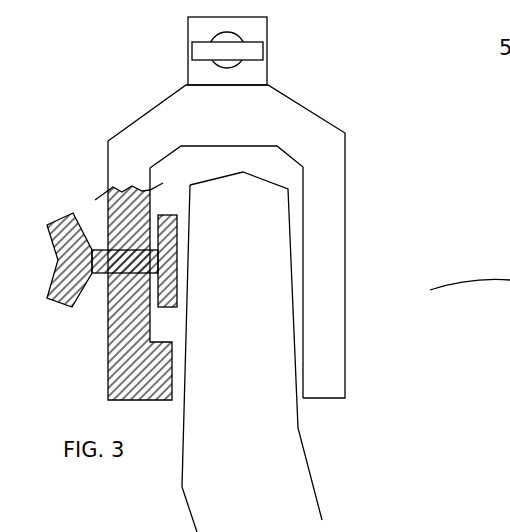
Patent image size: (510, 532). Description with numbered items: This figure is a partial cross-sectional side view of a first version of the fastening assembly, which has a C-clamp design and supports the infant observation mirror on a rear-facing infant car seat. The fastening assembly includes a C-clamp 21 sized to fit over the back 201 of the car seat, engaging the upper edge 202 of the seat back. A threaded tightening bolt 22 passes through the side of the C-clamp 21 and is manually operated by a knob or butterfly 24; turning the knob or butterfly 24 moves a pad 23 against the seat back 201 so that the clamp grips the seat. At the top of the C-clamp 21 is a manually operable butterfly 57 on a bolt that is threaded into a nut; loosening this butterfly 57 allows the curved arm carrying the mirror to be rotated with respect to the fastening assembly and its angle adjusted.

The butterfly 57 is at (258, 50).
The C-clamp 21 is at (277, 125).
The upper edge 202 is at (270, 175).
The back 201 is at (243, 312).
The pad 23 is at (183, 258).
The threaded tightening bolt 22 is at (116, 270).
The knob or butterfly 24 is at (62, 212).